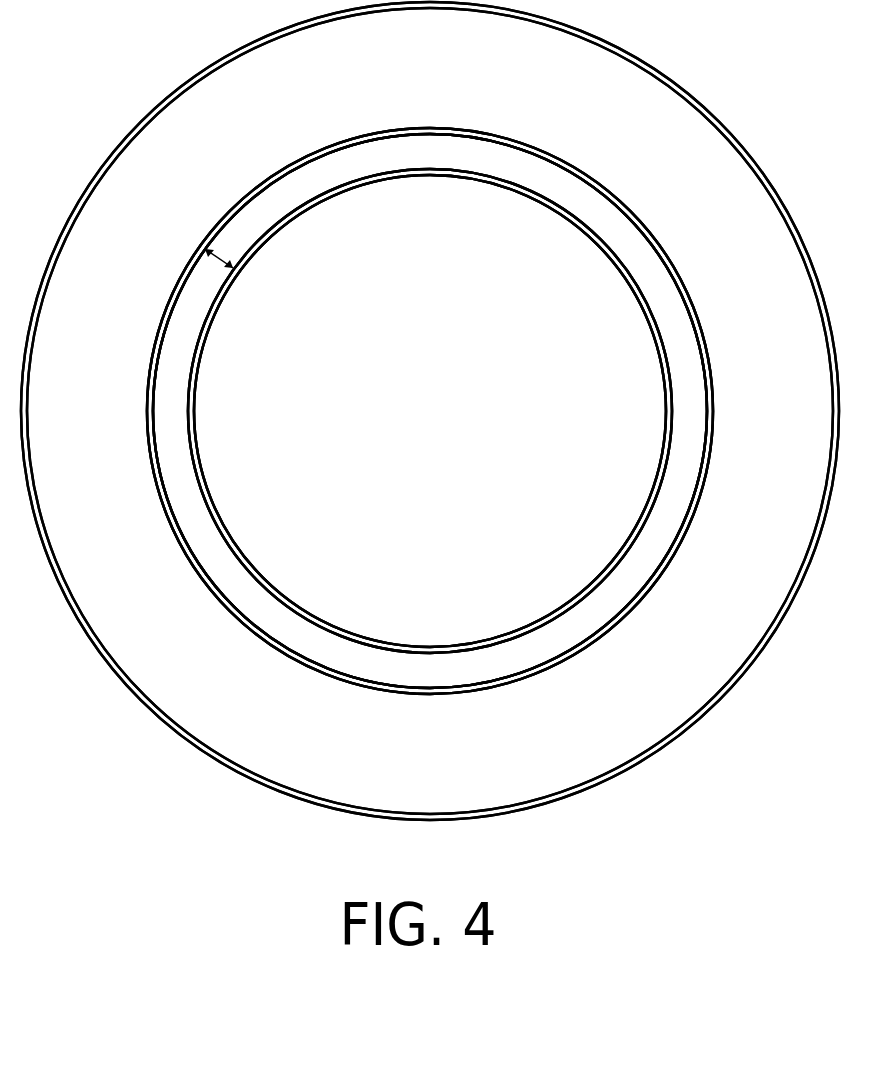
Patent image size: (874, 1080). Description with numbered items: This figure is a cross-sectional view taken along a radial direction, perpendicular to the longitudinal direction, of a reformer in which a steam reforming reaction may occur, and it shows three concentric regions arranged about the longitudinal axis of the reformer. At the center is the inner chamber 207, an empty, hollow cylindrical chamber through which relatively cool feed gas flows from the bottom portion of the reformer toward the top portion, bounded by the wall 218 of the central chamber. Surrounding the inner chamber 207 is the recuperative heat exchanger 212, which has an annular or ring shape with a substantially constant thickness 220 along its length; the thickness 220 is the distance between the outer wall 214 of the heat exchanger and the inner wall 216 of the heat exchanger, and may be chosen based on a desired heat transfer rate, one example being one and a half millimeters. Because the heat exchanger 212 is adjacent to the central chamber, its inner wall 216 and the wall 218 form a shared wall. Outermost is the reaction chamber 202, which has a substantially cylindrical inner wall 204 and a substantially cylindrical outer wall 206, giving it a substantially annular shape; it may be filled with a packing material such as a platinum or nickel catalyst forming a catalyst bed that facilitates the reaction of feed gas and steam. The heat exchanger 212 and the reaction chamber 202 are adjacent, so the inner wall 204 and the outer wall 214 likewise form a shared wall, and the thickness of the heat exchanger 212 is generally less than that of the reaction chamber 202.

The reaction chamber 202 is at (406, 81).
The inner wall 204 is at (170, 528).
The outer wall 206 is at (120, 679).
The inner chamber 207 is at (406, 423).
The recuperative heat exchanger 212 is at (406, 680).
The outer wall of the heat exchanger 214 is at (712, 428).
The inner wall of the heat exchanger 216 is at (662, 357).
The wall of the central chamber 218 is at (572, 222).
The thickness 220 is at (219, 258).